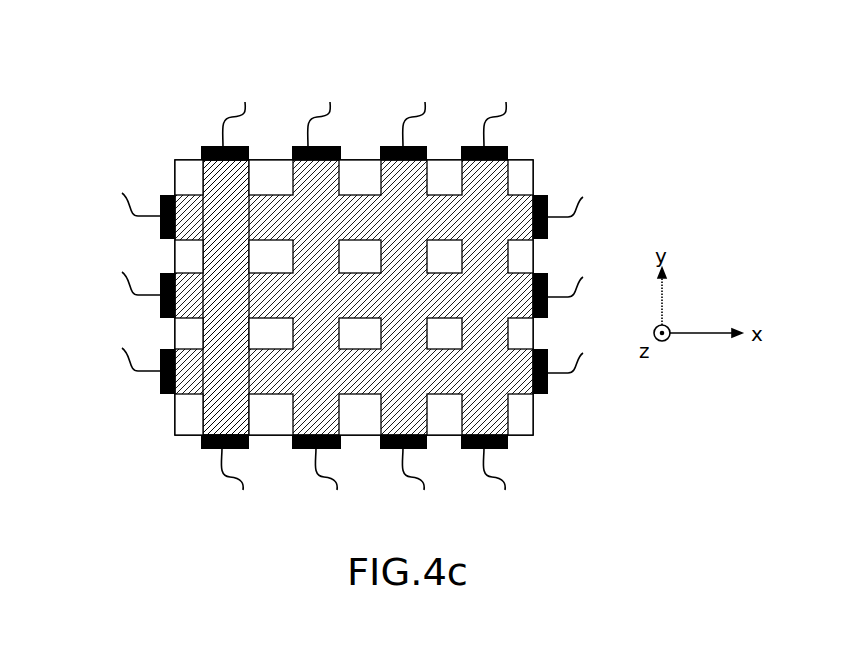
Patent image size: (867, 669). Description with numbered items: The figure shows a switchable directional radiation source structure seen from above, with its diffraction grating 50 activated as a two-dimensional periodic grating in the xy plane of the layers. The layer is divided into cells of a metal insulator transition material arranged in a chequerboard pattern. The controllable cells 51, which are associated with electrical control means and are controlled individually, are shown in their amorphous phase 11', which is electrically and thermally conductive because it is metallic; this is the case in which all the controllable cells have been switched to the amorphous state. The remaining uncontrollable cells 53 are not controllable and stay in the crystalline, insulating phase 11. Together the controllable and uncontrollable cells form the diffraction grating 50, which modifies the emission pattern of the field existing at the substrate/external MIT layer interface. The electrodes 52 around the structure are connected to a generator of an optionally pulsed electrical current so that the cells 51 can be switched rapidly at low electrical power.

The diffraction grating 50 is at (370, 282).
The crystalline phase 11 is at (370, 297).
The amorphous phase 11' is at (349, 297).
The controllable cells 51 is at (222, 390).
The electrodes 52 is at (226, 117).
The uncontrollable cells 53 is at (352, 240).